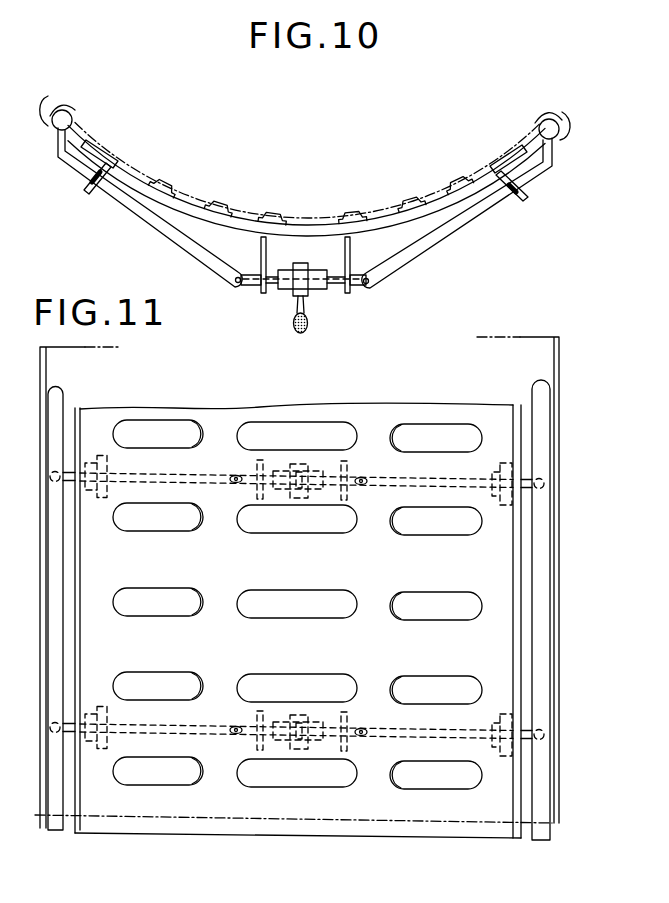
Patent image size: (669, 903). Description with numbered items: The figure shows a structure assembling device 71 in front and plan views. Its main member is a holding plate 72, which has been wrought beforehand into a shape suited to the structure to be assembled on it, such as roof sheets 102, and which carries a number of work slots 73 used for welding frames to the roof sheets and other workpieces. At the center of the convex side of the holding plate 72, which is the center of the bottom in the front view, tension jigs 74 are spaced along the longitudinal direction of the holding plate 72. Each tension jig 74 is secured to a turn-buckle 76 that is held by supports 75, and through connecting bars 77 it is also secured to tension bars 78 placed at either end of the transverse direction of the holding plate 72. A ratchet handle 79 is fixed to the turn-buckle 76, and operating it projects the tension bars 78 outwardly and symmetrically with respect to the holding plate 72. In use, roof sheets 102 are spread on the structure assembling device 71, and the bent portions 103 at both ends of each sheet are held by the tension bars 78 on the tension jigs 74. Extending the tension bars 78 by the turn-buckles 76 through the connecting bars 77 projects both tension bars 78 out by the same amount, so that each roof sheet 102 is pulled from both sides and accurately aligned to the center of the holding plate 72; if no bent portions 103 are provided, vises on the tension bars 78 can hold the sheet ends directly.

In FIG. 10, the structure assembling device 71 is at (539, 254).
In FIG. 11, the structure assembling device 71 is at (571, 525).
In FIG. 10, the holding plate 72 is at (229, 221).
In FIG. 11, the holding plate 72 is at (362, 810).
In FIG. 10, the work slots 73 is at (186, 186).
In FIG. 11, the work slots 73 is at (143, 778).
In FIG. 10, the tension jigs 74 is at (454, 292).
In FIG. 11, the tension jigs 74 is at (365, 498).
In FIG. 10, the supports 75 is at (345, 237).
In FIG. 11, the supports 75 is at (258, 490).
In FIG. 10, the turn-buckle 76 is at (283, 290).
In FIG. 11, the turn-buckle 76 is at (277, 470).
In FIG. 10, the connecting bars 77 is at (165, 232).
In FIG. 11, the connecting bars 77 is at (148, 473).
In FIG. 10, the tension bars 78 is at (68, 117).
In FIG. 11, the tension bars 78 is at (545, 572).
In FIG. 10, the ratchet handle 79 is at (310, 328).
In FIG. 11, the ratchet handle 79 is at (303, 470).
In FIG. 10, the roof sheets 102 is at (360, 208).
In FIG. 11, the roof sheets 102 is at (563, 655).
In FIG. 10, the bent portions 103 is at (55, 95).